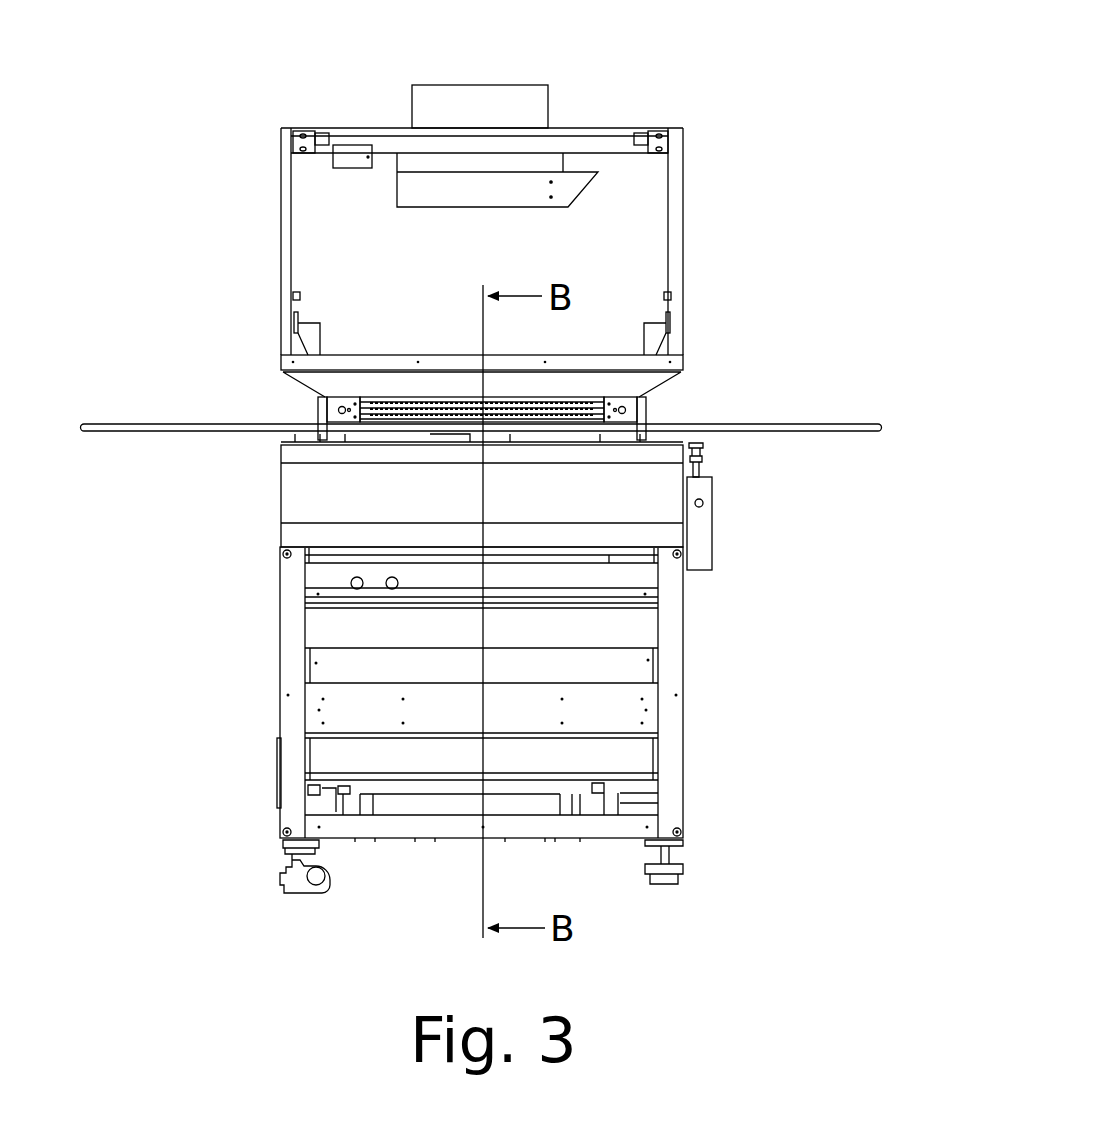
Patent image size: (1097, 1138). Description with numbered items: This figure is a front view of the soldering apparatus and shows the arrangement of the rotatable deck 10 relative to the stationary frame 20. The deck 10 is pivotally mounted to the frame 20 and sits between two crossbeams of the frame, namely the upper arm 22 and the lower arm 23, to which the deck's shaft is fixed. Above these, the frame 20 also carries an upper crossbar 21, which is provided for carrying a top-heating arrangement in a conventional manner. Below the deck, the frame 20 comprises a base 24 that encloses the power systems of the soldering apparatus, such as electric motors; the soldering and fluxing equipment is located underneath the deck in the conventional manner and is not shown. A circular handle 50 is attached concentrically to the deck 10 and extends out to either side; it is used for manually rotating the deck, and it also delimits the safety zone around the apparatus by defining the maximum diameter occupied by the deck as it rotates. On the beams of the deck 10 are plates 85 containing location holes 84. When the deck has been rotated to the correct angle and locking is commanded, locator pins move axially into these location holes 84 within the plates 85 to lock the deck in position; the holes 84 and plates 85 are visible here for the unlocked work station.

The rotatable deck 10 is at (296, 404).
The frame 20 is at (695, 103).
The upper crossbar 21 is at (398, 143).
The upper arm 22 is at (650, 390).
The lower arm 23 is at (670, 450).
The base 24 is at (278, 750).
The circular handle 50 is at (838, 425).
The location holes 84 is at (622, 398).
The plates 85 is at (342, 405).